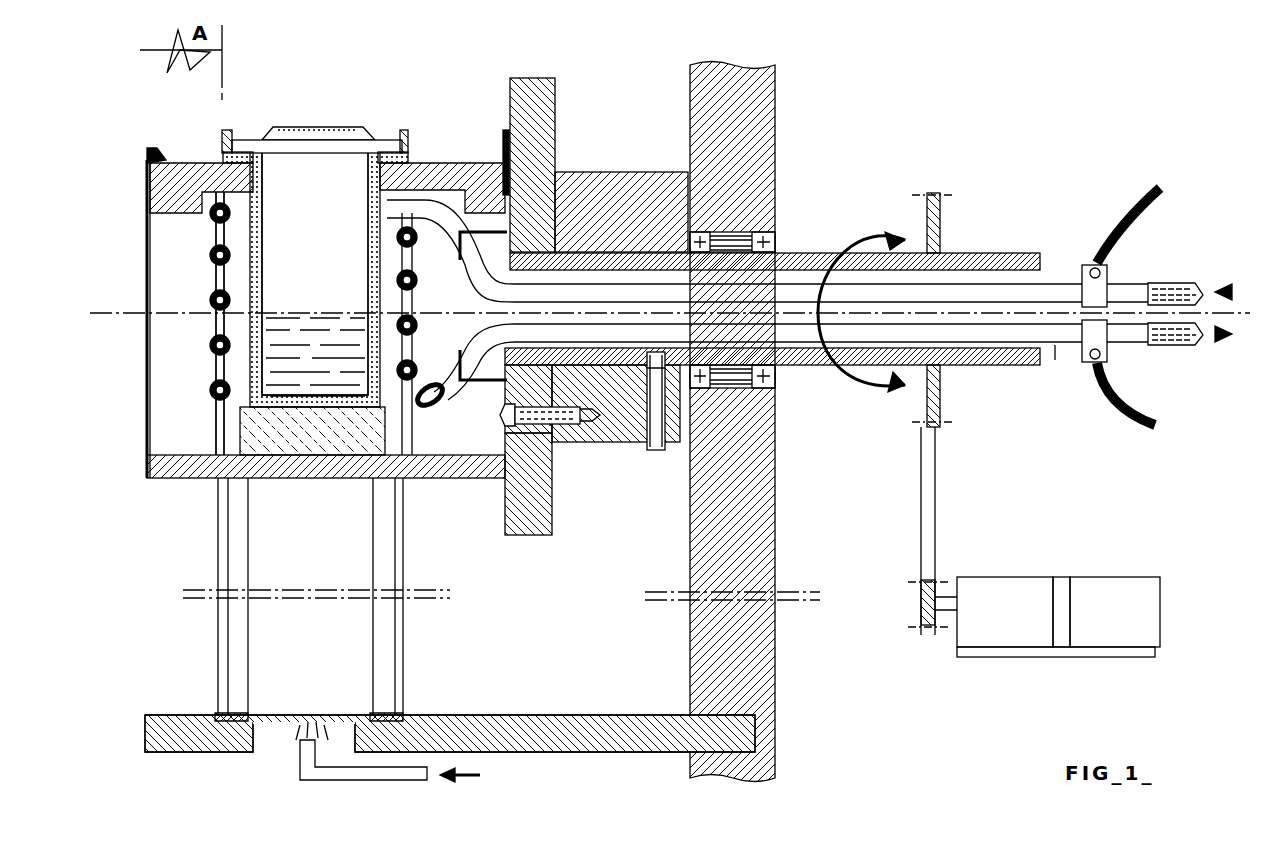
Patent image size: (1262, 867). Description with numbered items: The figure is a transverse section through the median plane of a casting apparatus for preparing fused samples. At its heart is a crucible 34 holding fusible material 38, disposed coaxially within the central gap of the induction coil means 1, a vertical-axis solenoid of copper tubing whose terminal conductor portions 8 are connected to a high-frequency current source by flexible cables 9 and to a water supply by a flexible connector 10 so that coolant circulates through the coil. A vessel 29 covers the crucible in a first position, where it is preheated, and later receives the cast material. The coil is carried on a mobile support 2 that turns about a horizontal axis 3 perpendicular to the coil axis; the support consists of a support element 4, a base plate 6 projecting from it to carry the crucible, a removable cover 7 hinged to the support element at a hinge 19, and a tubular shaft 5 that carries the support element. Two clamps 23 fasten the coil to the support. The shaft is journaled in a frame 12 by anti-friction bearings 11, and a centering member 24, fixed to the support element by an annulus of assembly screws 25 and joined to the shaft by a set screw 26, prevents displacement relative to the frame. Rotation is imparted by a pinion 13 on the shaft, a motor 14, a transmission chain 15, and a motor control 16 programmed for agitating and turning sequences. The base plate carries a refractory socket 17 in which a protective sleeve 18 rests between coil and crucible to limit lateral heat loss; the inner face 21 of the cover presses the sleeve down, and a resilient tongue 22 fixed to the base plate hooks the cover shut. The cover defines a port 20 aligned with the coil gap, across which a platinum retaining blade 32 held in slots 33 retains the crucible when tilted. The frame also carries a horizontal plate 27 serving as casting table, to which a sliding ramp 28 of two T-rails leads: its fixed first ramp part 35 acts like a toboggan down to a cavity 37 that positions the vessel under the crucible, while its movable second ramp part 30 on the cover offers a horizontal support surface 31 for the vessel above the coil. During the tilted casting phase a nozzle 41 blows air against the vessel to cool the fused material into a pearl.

The induction coil means 1 is at (207, 311).
The mobile support 2 is at (466, 506).
The horizontal axis 3 is at (1232, 325).
The support element 4 is at (550, 505).
The tubular shaft 5 is at (1005, 252).
The base plate 6 is at (178, 480).
The removable cover 7 is at (170, 158).
The terminal conductor portions 8 is at (1058, 355).
The flexible cables 9 is at (1145, 185).
The flexible connector 10 is at (1172, 283).
The anti-friction roller or ball bearings 11 is at (782, 230).
The frame 12 is at (782, 136).
The pinion 13 is at (945, 195).
The motor 14 is at (990, 577).
The transmission chain 15 is at (936, 468).
The motor control 16 is at (1125, 578).
The socket 17 is at (255, 435).
The protective sleeve 18 is at (210, 292).
The hinge 19 is at (500, 130).
The port 20 is at (265, 160).
The inner face 21 is at (438, 165).
The resilient tongue 22 is at (145, 385).
The clamps 23 is at (506, 410).
The centering member 24 is at (628, 172).
The assembly screws 25 is at (555, 426).
The set screw 26 is at (656, 450).
The plate (casting table) 27 is at (535, 715).
The sliding ramp 28 is at (212, 537).
The vessel 29 is at (335, 127).
The second sliding ramp part 30 is at (225, 128).
The horizontal support surface 31 is at (238, 140).
The platinum retaining blade 32 is at (365, 130).
The slots 33 is at (225, 137).
The crucible 34 is at (225, 372).
The first sliding ramp part 35 is at (235, 657).
The cavity 37 is at (278, 748).
The fusible material 38 is at (375, 395).
The nozzle 41 is at (312, 760).